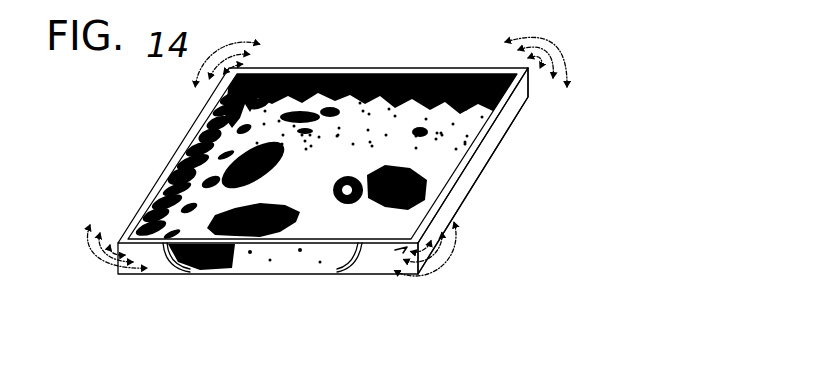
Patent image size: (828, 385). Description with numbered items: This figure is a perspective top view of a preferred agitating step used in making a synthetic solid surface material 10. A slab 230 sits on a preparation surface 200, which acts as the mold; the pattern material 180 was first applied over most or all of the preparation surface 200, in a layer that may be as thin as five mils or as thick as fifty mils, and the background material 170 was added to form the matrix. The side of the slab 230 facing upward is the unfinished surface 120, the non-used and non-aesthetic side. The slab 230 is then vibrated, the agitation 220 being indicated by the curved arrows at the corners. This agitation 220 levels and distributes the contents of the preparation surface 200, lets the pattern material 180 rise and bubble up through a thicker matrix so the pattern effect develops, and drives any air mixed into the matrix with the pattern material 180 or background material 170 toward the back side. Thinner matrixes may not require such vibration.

The synthetic solid surface material 10 is at (463, 68).
The unfinished surface 120 is at (187, 152).
The background material 170 is at (442, 168).
The pattern material 180 is at (423, 197).
The preparation surface 200 is at (512, 122).
The agitation 220 is at (562, 62).
The slab 230 is at (423, 273).